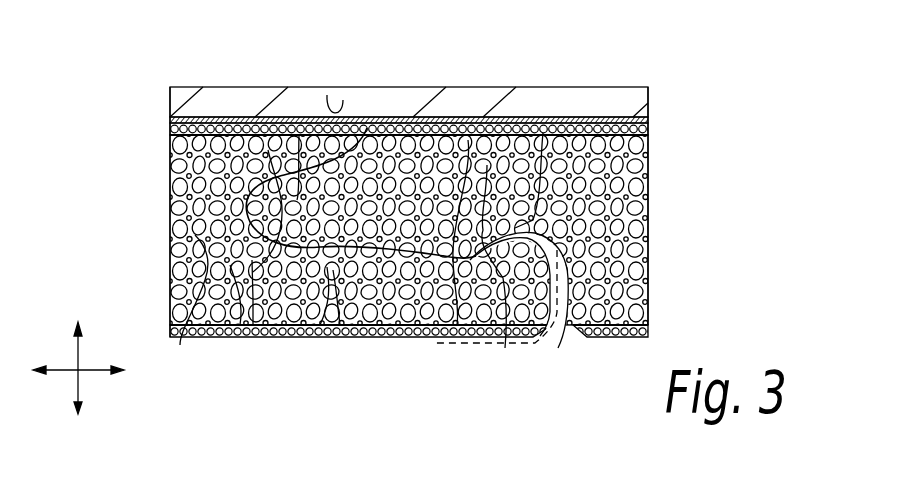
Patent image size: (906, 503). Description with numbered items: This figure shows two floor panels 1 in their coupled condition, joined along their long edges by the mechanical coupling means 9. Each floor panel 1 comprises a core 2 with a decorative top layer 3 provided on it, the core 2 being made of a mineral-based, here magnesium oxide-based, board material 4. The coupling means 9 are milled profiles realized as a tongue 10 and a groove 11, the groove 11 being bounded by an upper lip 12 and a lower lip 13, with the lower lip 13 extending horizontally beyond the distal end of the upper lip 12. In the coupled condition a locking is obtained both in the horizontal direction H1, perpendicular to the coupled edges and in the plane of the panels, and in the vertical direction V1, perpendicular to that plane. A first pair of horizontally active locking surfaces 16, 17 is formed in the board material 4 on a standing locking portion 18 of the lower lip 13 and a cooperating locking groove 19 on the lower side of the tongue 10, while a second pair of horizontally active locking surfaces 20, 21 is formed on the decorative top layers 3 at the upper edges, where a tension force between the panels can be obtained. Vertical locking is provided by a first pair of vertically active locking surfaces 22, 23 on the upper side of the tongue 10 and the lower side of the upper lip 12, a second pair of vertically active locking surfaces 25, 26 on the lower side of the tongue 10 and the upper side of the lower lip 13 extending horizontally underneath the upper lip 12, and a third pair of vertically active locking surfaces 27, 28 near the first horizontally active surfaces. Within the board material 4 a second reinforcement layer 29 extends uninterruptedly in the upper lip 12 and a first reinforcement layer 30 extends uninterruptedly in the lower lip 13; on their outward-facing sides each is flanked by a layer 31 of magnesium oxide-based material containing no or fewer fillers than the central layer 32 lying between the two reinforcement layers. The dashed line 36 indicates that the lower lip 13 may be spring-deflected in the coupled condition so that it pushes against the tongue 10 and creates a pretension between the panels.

The floor panel 1 is at (422, 219).
The core 2 is at (429, 219).
The decorative top layer 3 is at (407, 225).
The magnesium oxide-based board material 4 is at (180, 345).
The mechanical coupling means 9 is at (407, 315).
The tongue 10 is at (398, 190).
The groove 11 is at (240, 325).
The upper lip 12 is at (268, 150).
The lower lip 13 is at (320, 325).
The horizontally active locking surface 16 is at (487, 165).
The horizontally active locking surface 17 is at (543, 133).
The standing locking portion 18 is at (505, 348).
The locking groove 19 is at (567, 300).
The horizontally active locking surface 20 is at (327, 95).
The horizontally active locking surface 21 is at (343, 100).
The vertically active locking surface 22 is at (253, 325).
The vertically active locking surface 23 is at (299, 135).
The vertically active locking surface 25 is at (340, 325).
The vertically active locking surface 26 is at (370, 167).
The vertically active locking surface 27 is at (462, 282).
The vertically active locking surface 28 is at (468, 140).
The second reinforcement layer 29 is at (645, 136).
The first reinforcement layer 30 is at (652, 333).
The layer of magnesium oxide-based material 31 is at (648, 124).
The central layer 32 is at (600, 207).
The dashed line 36 is at (510, 343).
The vertical direction V1 is at (82, 358).
The horizontal direction H1 is at (70, 372).